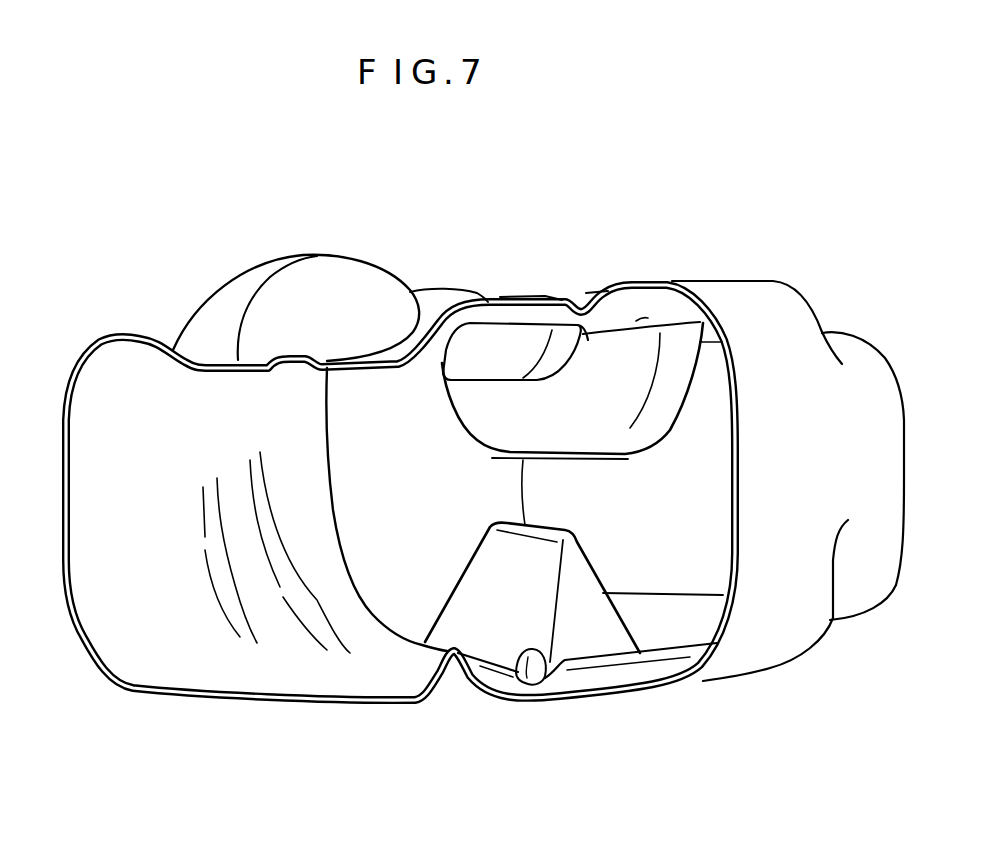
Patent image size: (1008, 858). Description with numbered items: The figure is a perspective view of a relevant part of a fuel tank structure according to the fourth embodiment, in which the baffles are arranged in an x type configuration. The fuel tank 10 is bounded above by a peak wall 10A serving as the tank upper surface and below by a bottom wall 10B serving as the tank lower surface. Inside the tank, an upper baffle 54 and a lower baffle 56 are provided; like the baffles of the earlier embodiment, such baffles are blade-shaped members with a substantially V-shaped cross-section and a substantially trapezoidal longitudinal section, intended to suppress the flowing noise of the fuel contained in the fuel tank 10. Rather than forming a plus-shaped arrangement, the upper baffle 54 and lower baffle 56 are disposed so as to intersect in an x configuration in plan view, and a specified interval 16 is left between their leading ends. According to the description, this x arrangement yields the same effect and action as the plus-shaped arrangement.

The fuel tank 10 is at (637, 257).
The peak wall 10A is at (540, 298).
The bottom wall 10B is at (631, 692).
The specified interval 16 is at (569, 509).
The upper baffle 54 is at (454, 408).
The lower baffle 56 is at (454, 589).